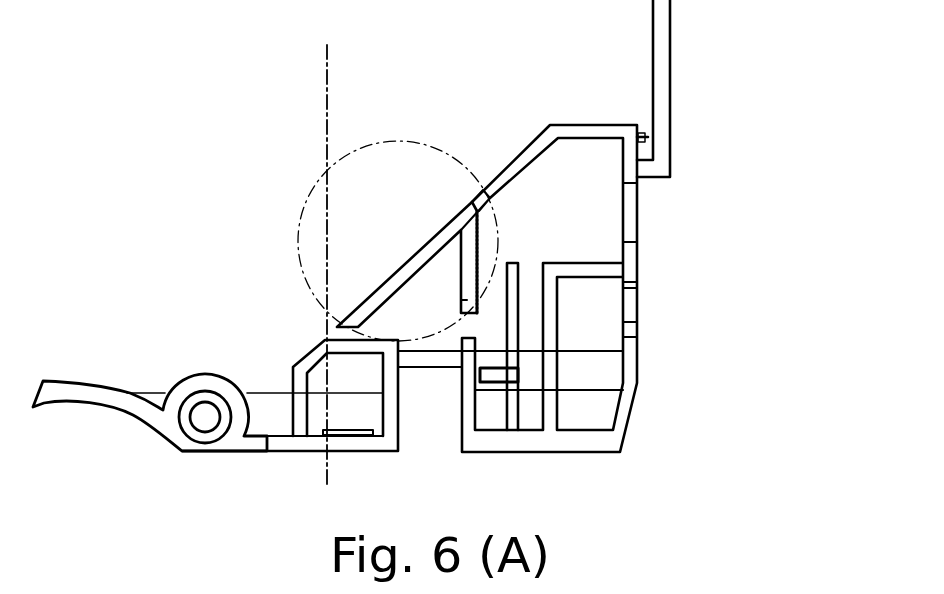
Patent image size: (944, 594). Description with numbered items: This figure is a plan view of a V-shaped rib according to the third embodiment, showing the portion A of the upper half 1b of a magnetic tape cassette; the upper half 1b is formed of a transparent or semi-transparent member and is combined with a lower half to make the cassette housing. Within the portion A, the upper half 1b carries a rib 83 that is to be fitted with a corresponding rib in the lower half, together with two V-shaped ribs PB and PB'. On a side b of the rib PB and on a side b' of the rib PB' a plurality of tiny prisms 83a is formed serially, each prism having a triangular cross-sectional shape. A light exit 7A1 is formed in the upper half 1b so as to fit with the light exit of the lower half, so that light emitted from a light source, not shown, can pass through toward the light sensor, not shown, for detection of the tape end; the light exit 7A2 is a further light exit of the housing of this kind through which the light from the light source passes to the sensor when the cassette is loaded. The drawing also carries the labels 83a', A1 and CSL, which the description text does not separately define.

The upper half 1b is at (660, 43).
The rib 83 is at (297, 365).
The tiny prisms 83a is at (413, 242).
The contact surface of plate 83a' is at (538, 257).
The light exit 7A1 is at (627, 303).
The light exit 7A2 is at (368, 333).
The V-shaped rib PB is at (318, 288).
The V-shaped rib PB' is at (600, 325).
The side of rib PB b is at (322, 235).
The side of rib PB' b' is at (598, 260).
The detail region A1 is at (348, 152).
The center line CSL is at (325, 244).
The portion A is at (102, 77).